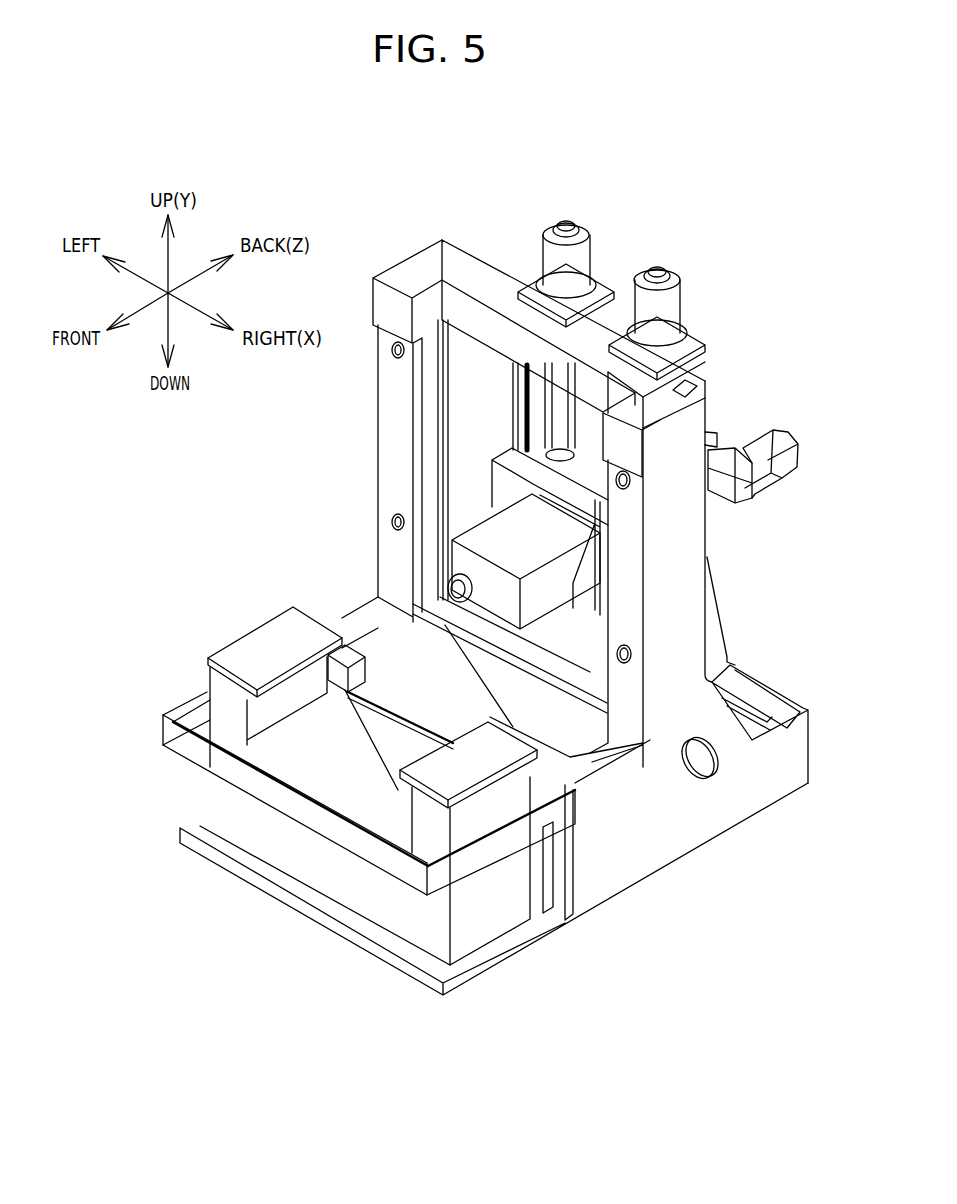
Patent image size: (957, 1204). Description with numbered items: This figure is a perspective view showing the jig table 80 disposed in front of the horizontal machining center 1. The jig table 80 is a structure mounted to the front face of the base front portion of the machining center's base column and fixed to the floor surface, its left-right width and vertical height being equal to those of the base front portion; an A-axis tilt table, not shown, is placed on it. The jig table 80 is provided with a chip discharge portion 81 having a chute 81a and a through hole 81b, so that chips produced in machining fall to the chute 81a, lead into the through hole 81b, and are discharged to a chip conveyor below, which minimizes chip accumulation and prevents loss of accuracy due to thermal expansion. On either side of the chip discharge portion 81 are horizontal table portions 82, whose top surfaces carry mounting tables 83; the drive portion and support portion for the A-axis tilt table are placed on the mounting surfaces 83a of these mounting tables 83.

The horizontal machining center 1 is at (741, 264).
The jig table 80 is at (192, 642).
The chip discharge portion 81 is at (290, 780).
The chute 81a is at (347, 790).
The through hole 81b is at (393, 835).
The horizontal table portion 82 is at (200, 718).
The mounting table 83 is at (235, 707).
The mounting surface 83a is at (297, 637).